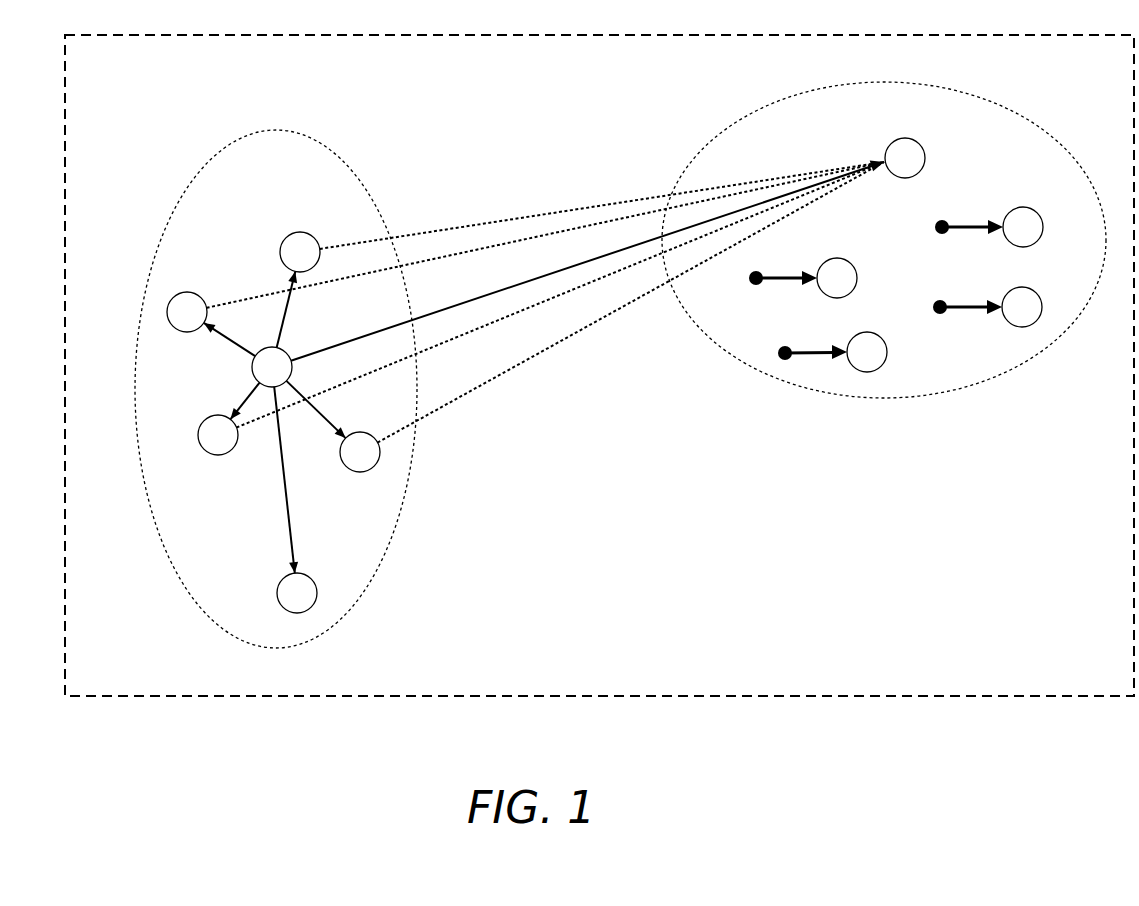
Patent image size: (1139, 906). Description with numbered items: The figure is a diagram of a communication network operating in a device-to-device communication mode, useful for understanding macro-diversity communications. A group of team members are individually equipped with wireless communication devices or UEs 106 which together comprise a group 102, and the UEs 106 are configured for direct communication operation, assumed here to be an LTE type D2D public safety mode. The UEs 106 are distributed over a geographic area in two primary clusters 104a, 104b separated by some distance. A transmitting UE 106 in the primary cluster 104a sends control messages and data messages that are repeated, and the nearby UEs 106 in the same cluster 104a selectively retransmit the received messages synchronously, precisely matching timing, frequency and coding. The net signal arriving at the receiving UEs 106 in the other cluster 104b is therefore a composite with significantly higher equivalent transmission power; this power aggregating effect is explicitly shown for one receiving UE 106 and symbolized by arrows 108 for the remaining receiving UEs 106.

The group 102 is at (670, 696).
The primary cluster 104a is at (362, 597).
The primary cluster 104b is at (1027, 358).
The wireless communication device (UE) 106 is at (606, 375).
The arrows 108 is at (876, 280).